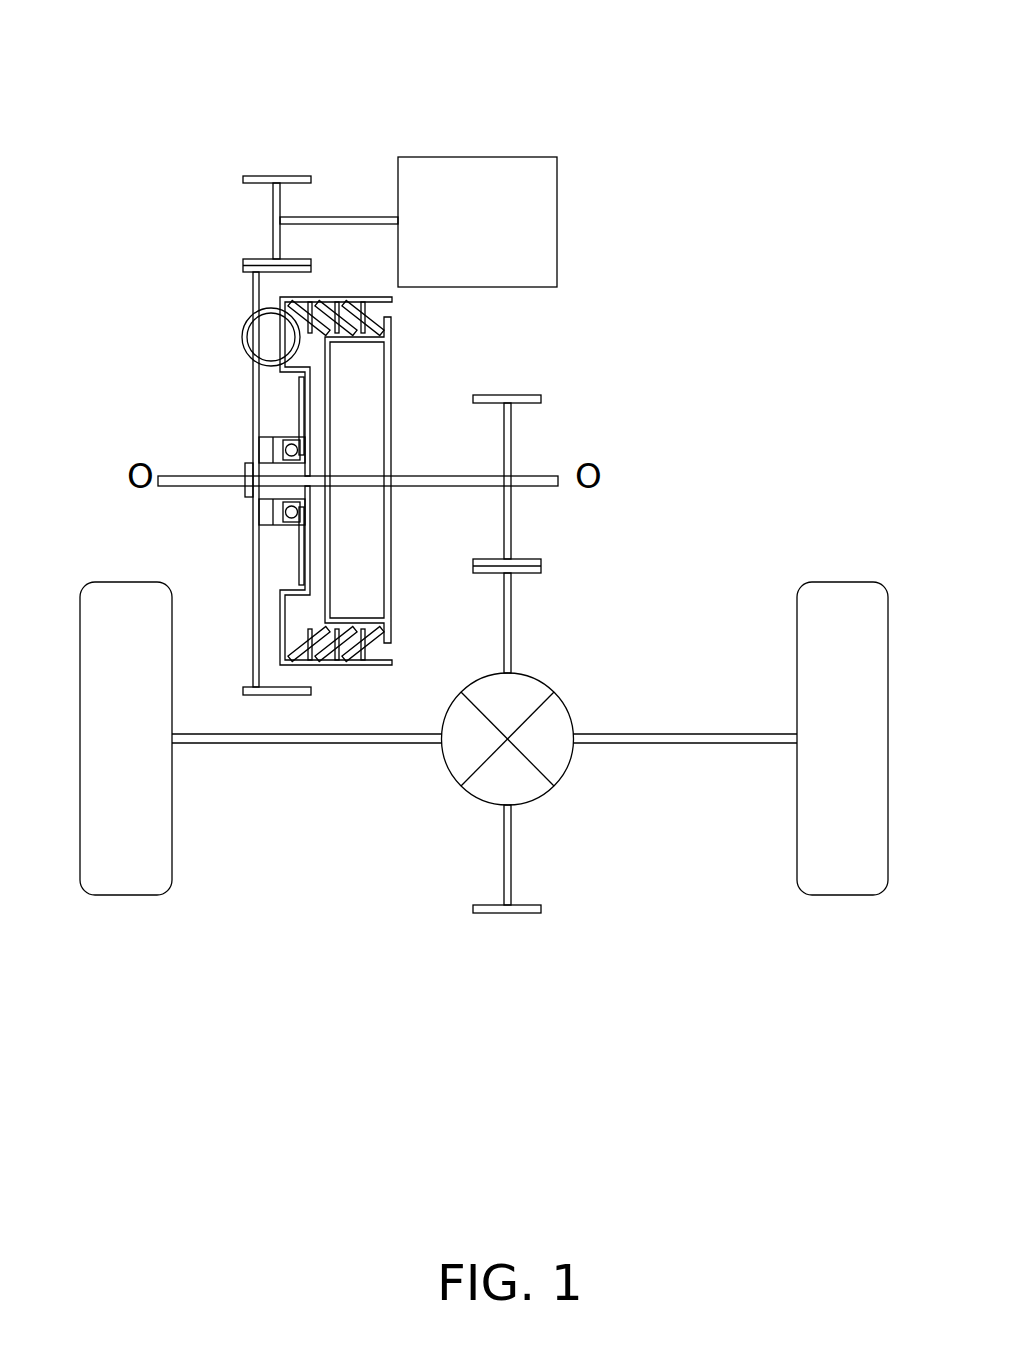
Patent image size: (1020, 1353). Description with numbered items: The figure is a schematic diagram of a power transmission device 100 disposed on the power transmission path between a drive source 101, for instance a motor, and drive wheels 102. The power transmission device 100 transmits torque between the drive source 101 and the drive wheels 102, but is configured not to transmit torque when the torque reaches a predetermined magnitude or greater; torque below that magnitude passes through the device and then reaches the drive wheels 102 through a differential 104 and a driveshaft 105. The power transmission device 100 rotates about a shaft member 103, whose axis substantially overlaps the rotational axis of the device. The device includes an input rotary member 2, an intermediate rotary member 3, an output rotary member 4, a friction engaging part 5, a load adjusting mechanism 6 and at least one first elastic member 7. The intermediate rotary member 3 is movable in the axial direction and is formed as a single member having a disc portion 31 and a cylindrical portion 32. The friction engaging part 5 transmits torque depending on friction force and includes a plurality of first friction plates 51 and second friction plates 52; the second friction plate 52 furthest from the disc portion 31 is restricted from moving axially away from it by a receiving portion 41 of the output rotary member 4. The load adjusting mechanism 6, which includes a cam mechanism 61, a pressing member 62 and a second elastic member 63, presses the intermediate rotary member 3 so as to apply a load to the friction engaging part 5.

The power transmission device 100 is at (707, 97).
The drive source 101 is at (512, 157).
The drive wheels 102 is at (842, 582).
The shaft member 103 is at (178, 487).
The differential 104 is at (532, 677).
The driveshaft 105 is at (718, 733).
The input rotary member 2 is at (252, 395).
The intermediate rotary member 3 is at (376, 668).
The disc portion 31 is at (283, 374).
The cylindrical portion 32 is at (337, 297).
The output rotary member 4 is at (397, 384).
The receiving portion 41 is at (390, 323).
The friction engaging part 5 is at (403, 310).
The first friction plates 51 is at (256, 324).
The second friction plates 52 is at (377, 297).
The load adjusting mechanism 6 is at (273, 532).
The cam mechanism 61 is at (271, 431).
The pressing member 62 is at (284, 439).
The second elastic member 63 is at (298, 570).
The first elastic member 7 is at (243, 333).